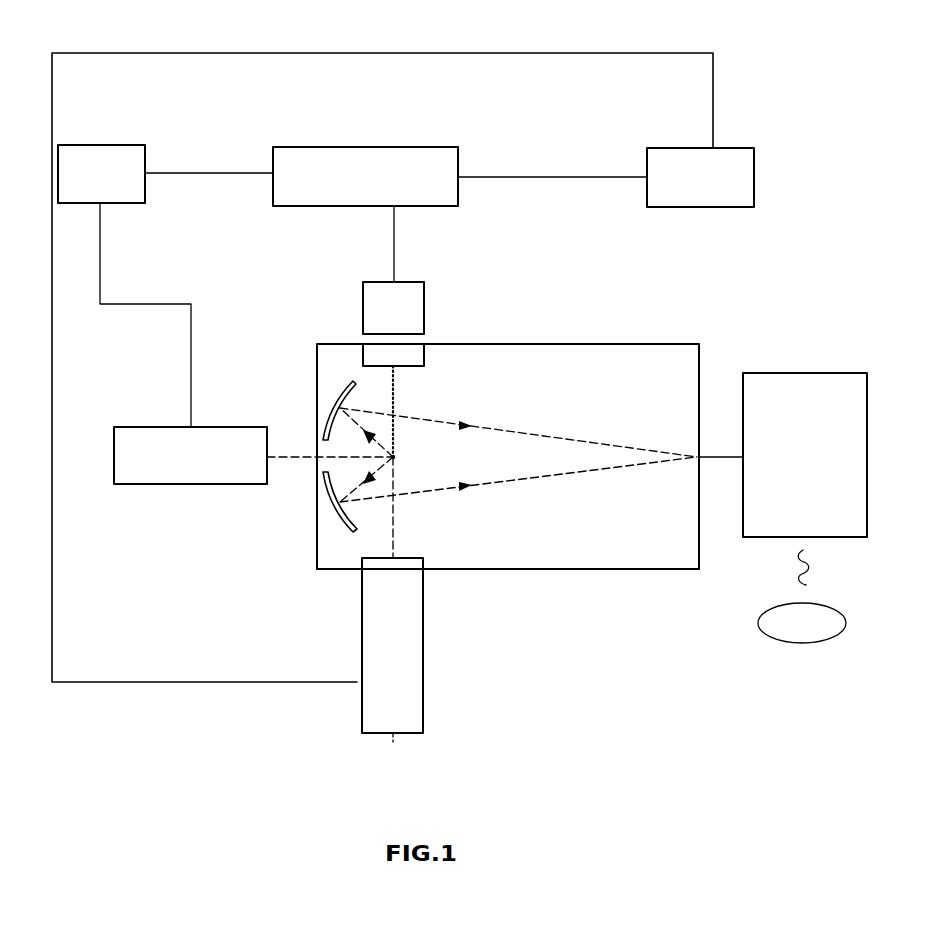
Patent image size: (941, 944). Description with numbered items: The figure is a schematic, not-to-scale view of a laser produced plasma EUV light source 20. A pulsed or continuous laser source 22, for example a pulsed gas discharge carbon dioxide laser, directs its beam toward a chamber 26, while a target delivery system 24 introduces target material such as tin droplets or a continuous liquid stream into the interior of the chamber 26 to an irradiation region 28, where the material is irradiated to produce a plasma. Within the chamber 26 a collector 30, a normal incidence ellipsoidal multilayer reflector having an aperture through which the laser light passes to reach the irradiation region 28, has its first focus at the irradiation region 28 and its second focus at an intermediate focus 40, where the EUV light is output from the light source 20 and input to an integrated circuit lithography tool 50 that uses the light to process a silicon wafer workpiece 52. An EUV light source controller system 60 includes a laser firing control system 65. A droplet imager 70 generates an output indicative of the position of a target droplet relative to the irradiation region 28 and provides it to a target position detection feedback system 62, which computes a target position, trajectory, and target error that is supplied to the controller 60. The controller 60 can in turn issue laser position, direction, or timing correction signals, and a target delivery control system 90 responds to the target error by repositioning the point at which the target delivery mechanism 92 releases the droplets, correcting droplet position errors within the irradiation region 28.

The laser produced plasma EUV light source 20 is at (240, 588).
The laser source 22 is at (163, 485).
The target delivery system 24 is at (467, 303).
The chamber 26 is at (673, 553).
The irradiation region 28 is at (396, 457).
The collector 30 is at (338, 392).
The intermediate focus 40 is at (663, 453).
The integrated circuit lithography tool 50 is at (877, 502).
The silicon wafer workpiece 52 is at (828, 650).
The EUV light source controller system 60 is at (364, 146).
The target position detection feedback system 62 is at (686, 147).
The laser firing control system 65 is at (96, 144).
The droplet imager 70 is at (423, 652).
The target delivery control system 90 is at (363, 305).
The target delivery mechanism 92 is at (424, 356).